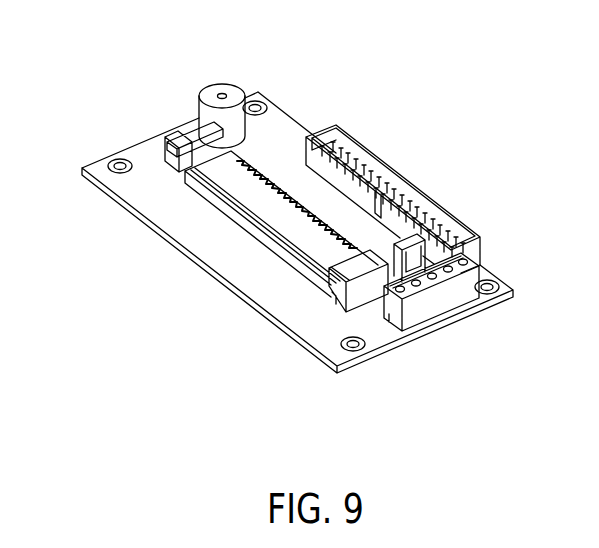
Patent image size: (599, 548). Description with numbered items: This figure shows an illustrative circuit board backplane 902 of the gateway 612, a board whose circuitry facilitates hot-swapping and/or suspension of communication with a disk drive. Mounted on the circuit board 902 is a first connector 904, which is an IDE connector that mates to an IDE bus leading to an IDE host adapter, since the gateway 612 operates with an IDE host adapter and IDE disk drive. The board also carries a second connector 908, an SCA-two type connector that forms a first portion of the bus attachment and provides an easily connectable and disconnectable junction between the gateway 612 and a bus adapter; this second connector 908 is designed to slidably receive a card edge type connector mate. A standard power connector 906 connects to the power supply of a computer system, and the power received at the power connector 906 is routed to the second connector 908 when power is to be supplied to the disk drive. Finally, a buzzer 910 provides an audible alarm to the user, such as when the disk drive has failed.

The gateway 612 is at (328, 222).
The circuit board backplane 902 is at (386, 352).
The first connector 904 is at (488, 242).
The power connector 906 is at (441, 306).
The second connector 908 is at (195, 138).
The buzzer 910 is at (223, 93).